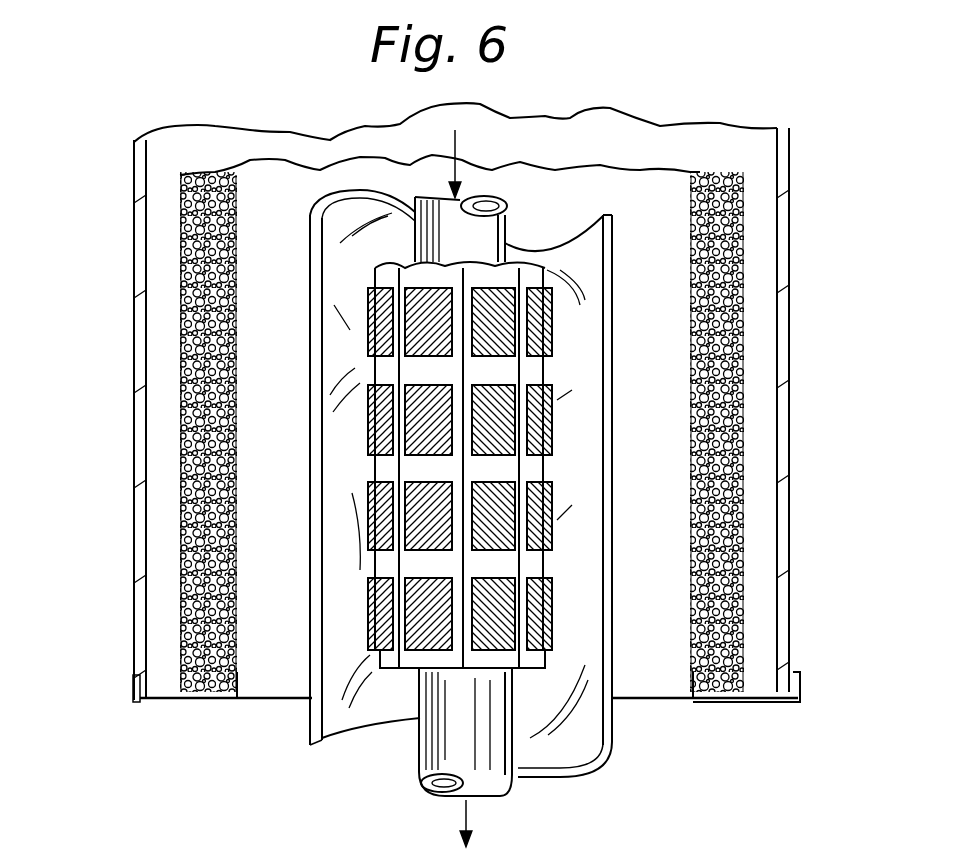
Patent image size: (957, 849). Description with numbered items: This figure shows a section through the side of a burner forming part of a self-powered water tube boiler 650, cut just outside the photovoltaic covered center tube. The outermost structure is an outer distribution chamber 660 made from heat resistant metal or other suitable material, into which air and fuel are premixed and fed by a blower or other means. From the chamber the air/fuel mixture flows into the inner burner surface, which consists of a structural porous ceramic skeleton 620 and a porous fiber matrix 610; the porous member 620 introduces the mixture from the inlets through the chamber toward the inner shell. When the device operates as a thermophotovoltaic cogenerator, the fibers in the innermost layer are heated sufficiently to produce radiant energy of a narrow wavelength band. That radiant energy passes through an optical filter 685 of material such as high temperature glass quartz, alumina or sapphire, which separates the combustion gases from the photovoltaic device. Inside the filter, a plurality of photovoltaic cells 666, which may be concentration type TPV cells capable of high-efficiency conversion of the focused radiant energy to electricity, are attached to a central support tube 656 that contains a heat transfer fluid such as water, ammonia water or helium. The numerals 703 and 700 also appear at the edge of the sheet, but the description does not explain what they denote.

The self-powered water tube boiler 650 is at (116, 388).
The outer distribution chamber 660 is at (762, 382).
The porous fiber matrix 610 is at (226, 645).
The porous ceramic skeleton 620 is at (720, 700).
The optical filter 685 is at (604, 757).
The support tube 656 is at (410, 677).
The photovoltaic cells 666 is at (387, 655).
The element 703 is at (736, 839).
The element 700 is at (797, 848).